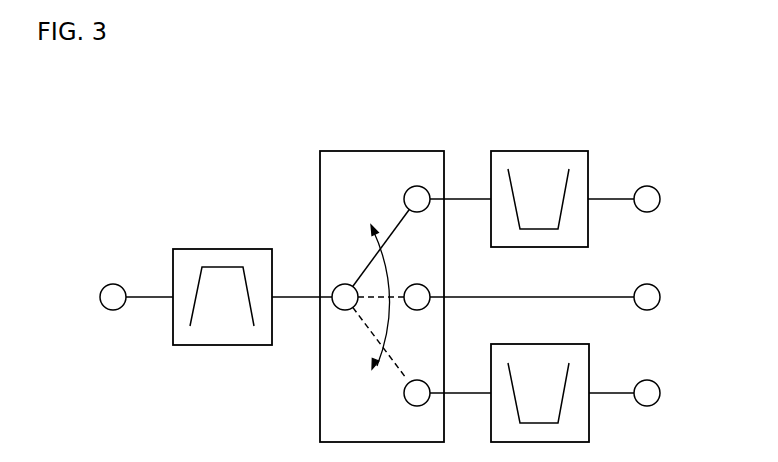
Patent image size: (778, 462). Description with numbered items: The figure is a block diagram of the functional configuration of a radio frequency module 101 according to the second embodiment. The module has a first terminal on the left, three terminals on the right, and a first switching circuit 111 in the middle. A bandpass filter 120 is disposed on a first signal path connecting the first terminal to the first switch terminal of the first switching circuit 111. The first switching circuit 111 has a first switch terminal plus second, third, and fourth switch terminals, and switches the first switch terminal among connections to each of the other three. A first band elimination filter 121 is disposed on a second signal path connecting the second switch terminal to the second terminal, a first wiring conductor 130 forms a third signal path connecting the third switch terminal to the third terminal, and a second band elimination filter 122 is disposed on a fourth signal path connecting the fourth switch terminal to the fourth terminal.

The radio frequency module 101 is at (296, 99).
The first switching circuit 111 is at (397, 151).
The bandpass filter 120 is at (223, 249).
The first band elimination filter 121 is at (542, 151).
The second band elimination filter 122 is at (590, 365).
The first wiring conductor 130 is at (588, 297).